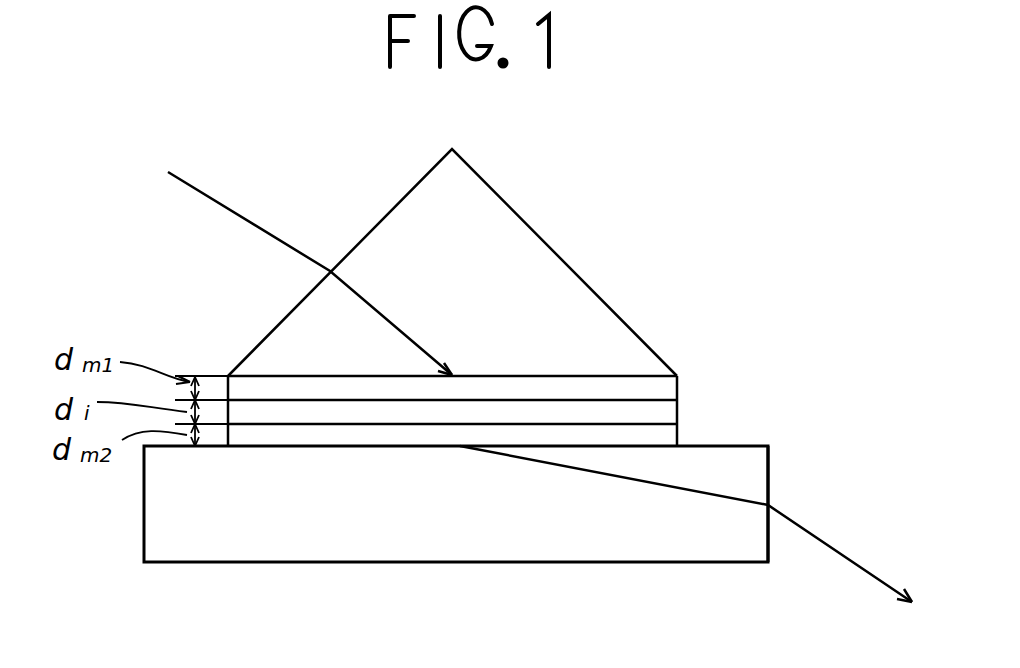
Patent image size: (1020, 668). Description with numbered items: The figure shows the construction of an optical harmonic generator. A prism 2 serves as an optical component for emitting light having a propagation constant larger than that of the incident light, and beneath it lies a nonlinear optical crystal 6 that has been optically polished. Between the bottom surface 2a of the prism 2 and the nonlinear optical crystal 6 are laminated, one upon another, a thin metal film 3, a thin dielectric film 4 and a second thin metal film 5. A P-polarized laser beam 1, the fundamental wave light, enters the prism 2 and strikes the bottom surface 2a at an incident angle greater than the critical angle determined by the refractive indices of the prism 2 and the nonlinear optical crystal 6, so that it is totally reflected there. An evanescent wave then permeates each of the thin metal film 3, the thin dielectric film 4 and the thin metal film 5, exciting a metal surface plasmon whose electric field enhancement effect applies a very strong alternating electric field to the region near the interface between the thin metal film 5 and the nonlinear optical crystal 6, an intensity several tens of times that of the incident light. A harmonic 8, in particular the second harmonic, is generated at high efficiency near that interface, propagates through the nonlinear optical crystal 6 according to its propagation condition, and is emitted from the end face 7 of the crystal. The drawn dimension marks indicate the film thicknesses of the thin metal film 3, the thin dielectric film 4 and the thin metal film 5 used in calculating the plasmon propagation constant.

The P-polarized laser beam 1 is at (240, 214).
The prism 2 is at (560, 268).
The bottom surface of the prism 2a is at (590, 371).
The thin metal film 3 is at (662, 387).
The thin dielectric film 4 is at (662, 408).
The thin metal film 5 is at (662, 432).
The nonlinear optical crystal 6 is at (313, 554).
The end face of the crystal 7 is at (770, 463).
The harmonic 8 is at (853, 563).